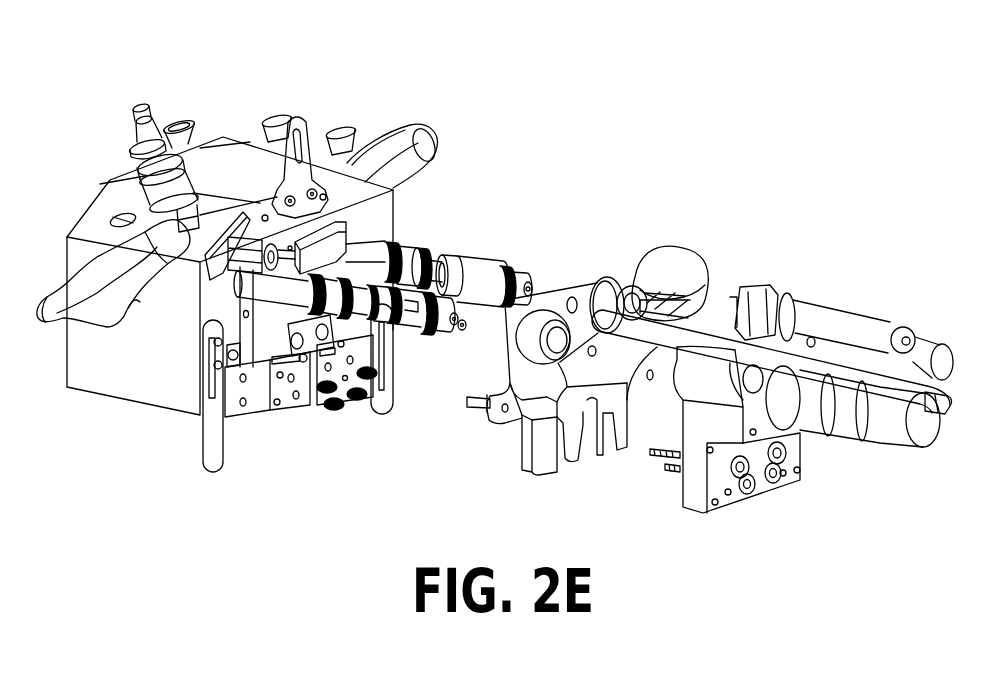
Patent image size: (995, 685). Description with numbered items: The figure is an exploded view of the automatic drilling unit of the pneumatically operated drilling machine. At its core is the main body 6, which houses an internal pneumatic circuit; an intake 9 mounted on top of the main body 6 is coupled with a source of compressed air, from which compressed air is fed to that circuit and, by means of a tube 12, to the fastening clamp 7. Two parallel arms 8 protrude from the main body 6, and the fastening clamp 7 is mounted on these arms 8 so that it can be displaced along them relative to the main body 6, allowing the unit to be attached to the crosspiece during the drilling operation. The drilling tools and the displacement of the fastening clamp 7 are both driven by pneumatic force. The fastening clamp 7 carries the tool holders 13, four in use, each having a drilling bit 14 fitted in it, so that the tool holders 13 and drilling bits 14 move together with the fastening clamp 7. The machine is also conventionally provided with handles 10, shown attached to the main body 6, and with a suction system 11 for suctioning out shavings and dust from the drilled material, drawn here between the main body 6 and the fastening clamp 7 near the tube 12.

The main body 6 is at (173, 370).
The fastening clamp 7 is at (703, 377).
The parallel arms 8 is at (483, 266).
The intake 9 is at (133, 110).
The handles 10 is at (90, 300).
The suction system 11 is at (678, 270).
The tube 12 is at (822, 367).
The tool holders 13 is at (773, 485).
The drilling bits 14 is at (655, 457).